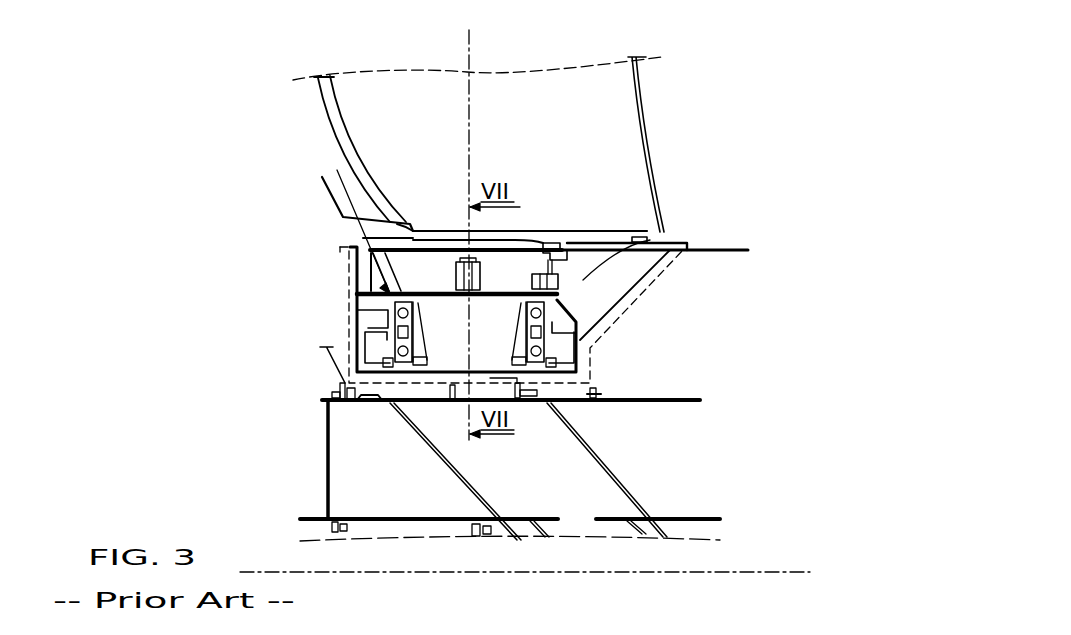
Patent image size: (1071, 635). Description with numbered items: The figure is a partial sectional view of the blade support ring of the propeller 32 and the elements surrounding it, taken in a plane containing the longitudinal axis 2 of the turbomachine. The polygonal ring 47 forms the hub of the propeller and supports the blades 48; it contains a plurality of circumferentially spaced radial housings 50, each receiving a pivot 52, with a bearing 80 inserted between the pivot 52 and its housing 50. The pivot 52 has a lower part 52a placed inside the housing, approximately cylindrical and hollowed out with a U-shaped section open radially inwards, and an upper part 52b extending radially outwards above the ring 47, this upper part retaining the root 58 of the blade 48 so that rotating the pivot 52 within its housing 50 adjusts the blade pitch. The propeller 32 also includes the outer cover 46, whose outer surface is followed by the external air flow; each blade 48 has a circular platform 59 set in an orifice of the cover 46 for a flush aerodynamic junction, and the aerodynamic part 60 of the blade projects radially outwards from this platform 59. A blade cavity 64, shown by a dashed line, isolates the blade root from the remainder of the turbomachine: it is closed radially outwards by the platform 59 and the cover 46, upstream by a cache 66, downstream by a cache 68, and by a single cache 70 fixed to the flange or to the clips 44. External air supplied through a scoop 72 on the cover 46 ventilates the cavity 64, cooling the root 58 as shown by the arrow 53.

The longitudinal axis 2 is at (773, 572).
The propeller 32 is at (672, 81).
The clips 44 is at (640, 508).
The outer cover 46 is at (722, 249).
The polygonal ring 47 is at (348, 340).
The blade 48 is at (622, 158).
The radial housing 50 is at (403, 356).
The pivot 52 is at (355, 300).
The lower part of pivot 52a is at (427, 360).
The upper part of pivot 52b is at (547, 245).
The arrow 53 is at (337, 170).
The blade root 58 is at (433, 278).
The platform 59 is at (445, 242).
The aerodynamic part 60 is at (597, 70).
The blade cavity 64 is at (628, 300).
The upstream cache 66 is at (386, 322).
The downstream cache 68 is at (643, 280).
The cache 70 is at (447, 400).
The scoop 72 is at (650, 238).
The bearing 80 is at (541, 313).